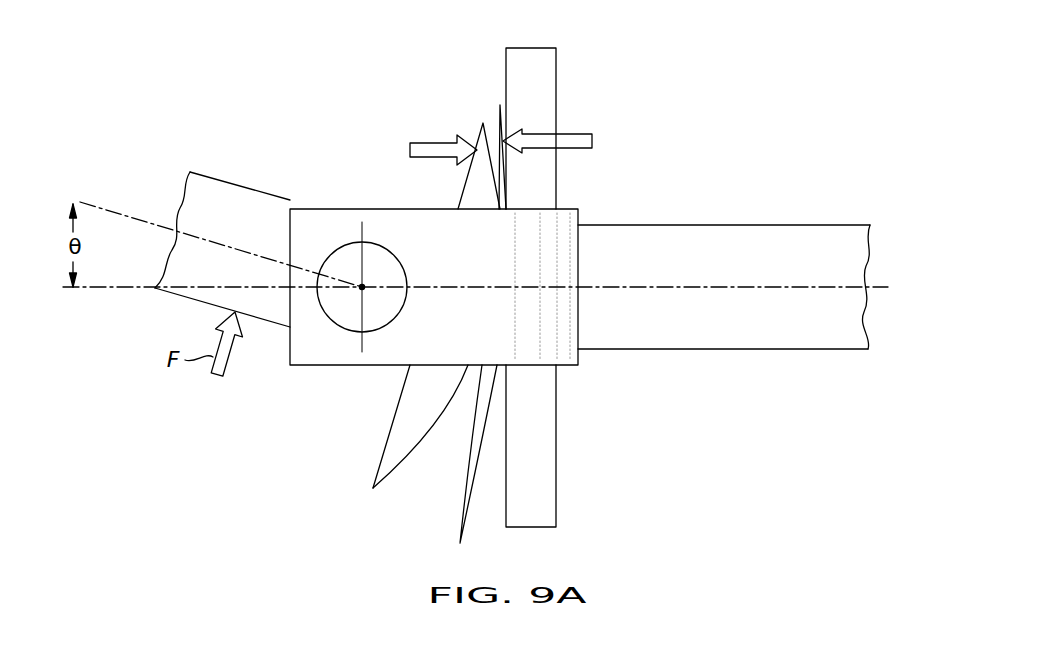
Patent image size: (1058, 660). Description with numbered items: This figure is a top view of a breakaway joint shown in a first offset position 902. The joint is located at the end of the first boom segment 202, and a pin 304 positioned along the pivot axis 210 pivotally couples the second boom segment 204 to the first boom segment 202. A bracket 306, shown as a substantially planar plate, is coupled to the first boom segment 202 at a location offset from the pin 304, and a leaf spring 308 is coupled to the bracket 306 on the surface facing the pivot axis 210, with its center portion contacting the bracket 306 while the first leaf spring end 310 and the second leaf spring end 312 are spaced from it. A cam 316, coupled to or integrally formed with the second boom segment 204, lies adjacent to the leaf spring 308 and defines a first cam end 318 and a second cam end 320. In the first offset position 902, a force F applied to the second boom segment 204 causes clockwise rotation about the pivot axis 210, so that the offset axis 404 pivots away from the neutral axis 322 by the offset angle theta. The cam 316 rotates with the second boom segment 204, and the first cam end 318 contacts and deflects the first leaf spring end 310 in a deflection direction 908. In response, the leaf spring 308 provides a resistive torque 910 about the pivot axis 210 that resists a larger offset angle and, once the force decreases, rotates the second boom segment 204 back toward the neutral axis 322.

The first boom segment 202 is at (798, 238).
The second boom segment 204 is at (223, 188).
The pivot axis 210 is at (362, 287).
The pin 304 is at (407, 317).
The bracket 306 is at (541, 58).
The leaf spring 308 is at (482, 413).
The first leaf spring end 310 is at (500, 107).
The second leaf spring end 312 is at (460, 543).
The cam 316 is at (402, 408).
The first cam end 318 is at (483, 122).
The second cam end 320 is at (373, 488).
The neutral axis 322 is at (93, 292).
The offset axis 404 is at (107, 210).
The first offset position 902 is at (713, 122).
The deflection direction 908 is at (423, 142).
The resistive torque 910 is at (580, 132).